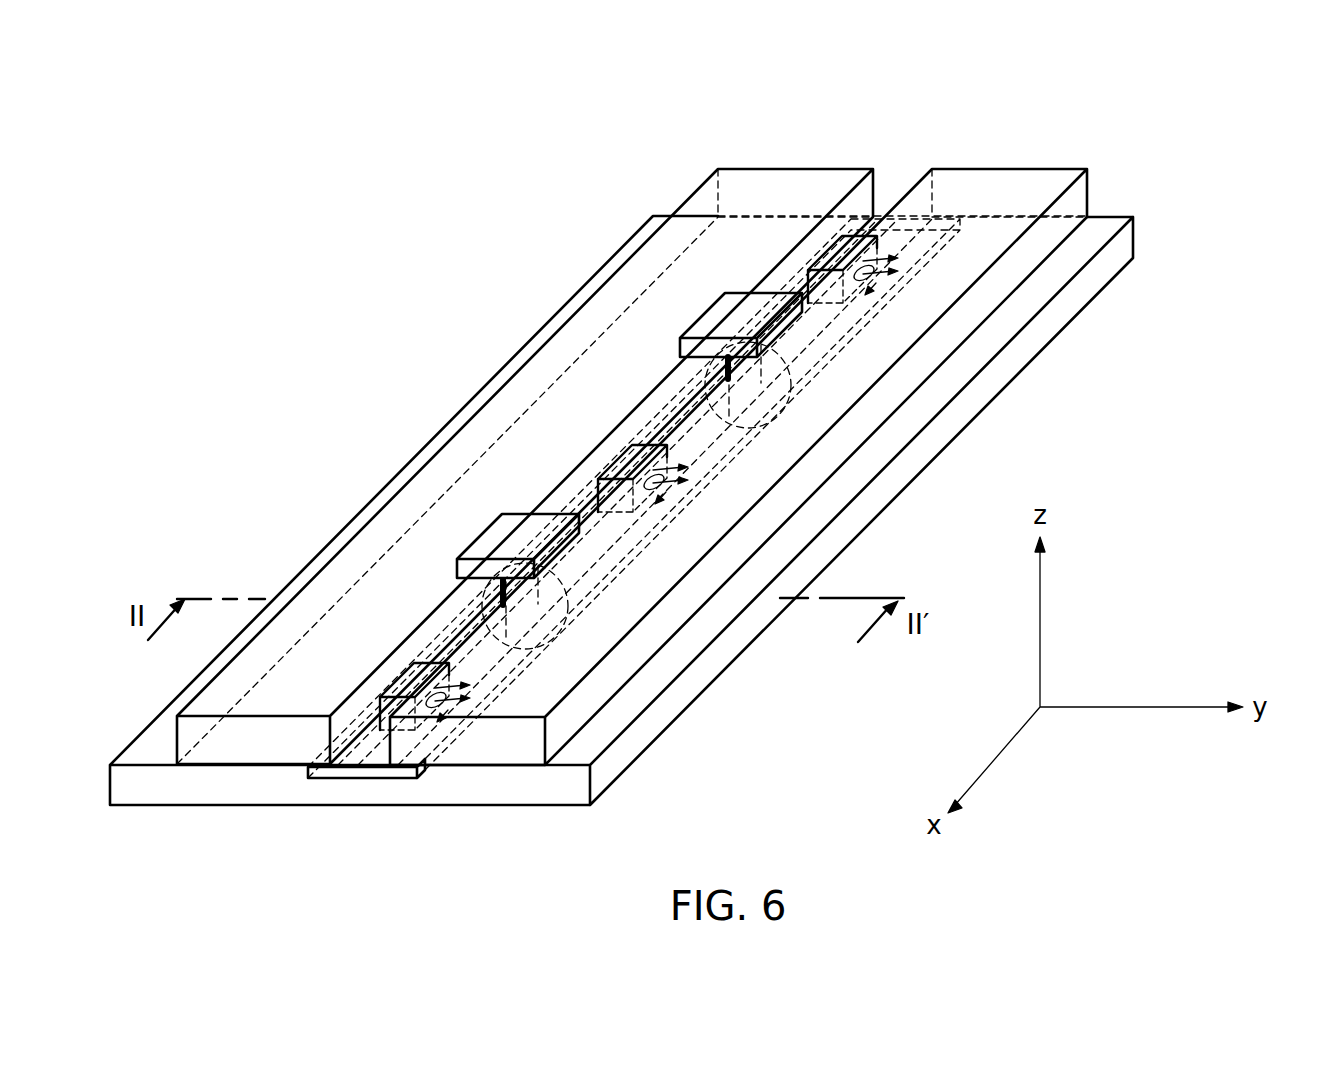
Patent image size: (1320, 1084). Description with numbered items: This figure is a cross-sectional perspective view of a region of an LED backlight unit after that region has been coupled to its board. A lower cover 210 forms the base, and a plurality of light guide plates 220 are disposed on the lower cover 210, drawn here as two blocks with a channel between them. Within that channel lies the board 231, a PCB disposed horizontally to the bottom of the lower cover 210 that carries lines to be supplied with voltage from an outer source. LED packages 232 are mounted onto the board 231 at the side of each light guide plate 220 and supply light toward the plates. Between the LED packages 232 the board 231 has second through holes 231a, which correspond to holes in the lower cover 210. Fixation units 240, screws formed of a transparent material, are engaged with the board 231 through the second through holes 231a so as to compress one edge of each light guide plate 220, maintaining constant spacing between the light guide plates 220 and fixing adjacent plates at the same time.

The lower cover 210 is at (1112, 226).
The light guide plate 220 is at (1050, 181).
The board 231 is at (358, 780).
The second through hole 231a is at (500, 605).
The LED package 232 is at (857, 234).
The fixation unit 240 is at (727, 316).